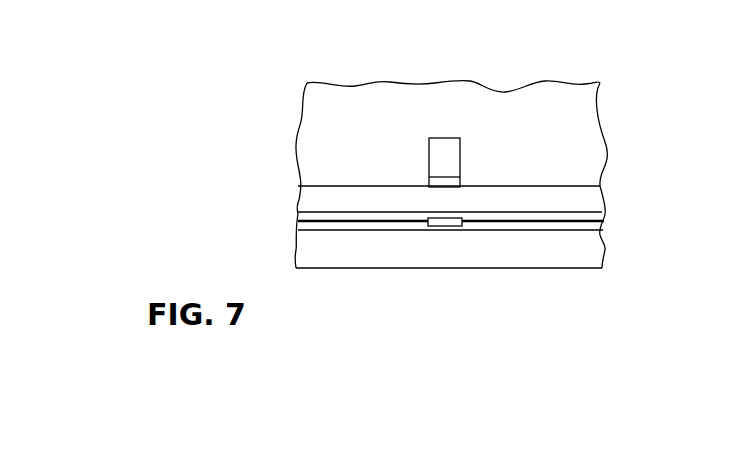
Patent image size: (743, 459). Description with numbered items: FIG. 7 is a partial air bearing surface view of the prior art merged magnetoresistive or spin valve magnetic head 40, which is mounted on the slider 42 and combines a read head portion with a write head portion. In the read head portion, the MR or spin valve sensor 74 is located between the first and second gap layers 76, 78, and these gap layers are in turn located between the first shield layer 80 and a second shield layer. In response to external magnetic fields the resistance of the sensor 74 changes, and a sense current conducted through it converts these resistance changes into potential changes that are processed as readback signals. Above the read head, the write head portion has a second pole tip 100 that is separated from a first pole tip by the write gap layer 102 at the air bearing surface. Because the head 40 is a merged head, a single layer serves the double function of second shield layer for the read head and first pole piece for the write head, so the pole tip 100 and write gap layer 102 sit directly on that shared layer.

The magnetic head 40 is at (622, 96).
The slider 42 is at (308, 108).
The second pole tip 100 is at (451, 144).
The write gap layer 102 is at (445, 180).
The first shield layer 80 is at (593, 252).
The second gap layer 78 is at (563, 218).
The first gap layer 76 is at (357, 230).
The MR or spin valve sensor 74 is at (443, 226).